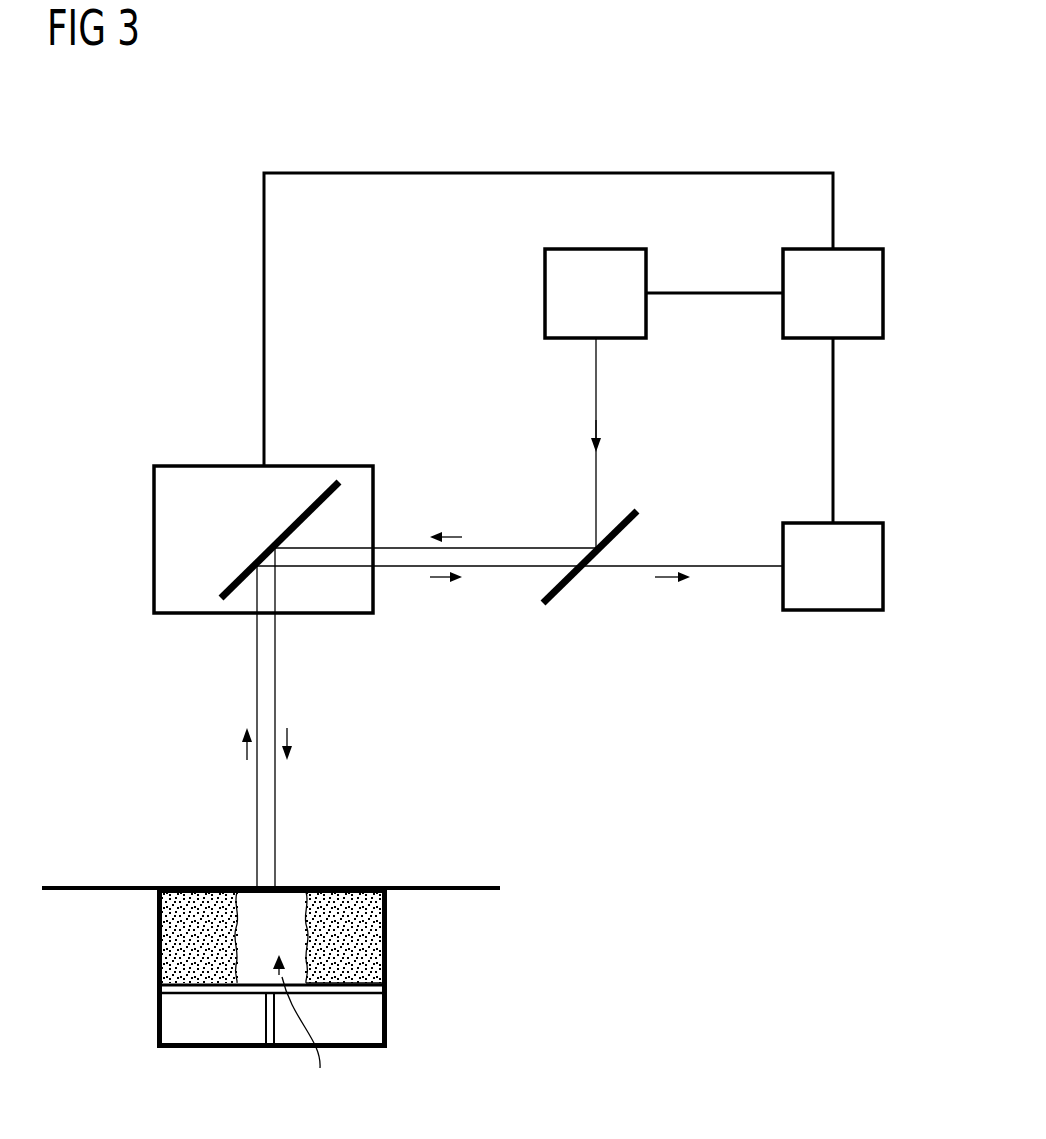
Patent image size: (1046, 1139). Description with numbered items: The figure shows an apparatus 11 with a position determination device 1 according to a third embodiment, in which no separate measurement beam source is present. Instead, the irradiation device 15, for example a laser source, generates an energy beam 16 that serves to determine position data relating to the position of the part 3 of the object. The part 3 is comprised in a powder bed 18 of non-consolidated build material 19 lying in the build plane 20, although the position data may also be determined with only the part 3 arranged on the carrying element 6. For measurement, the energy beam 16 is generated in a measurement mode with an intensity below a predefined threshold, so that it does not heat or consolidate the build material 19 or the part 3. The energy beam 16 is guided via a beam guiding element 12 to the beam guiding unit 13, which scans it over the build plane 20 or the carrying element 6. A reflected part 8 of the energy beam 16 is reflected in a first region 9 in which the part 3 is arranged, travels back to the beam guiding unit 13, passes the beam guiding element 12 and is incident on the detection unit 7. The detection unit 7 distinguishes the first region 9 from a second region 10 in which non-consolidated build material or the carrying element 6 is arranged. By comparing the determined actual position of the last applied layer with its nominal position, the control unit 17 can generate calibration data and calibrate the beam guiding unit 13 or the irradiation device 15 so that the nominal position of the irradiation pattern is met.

The position determination device 1 is at (877, 670).
The part of the object 3 is at (285, 900).
The carrying element 6 is at (183, 988).
The detection unit 7 is at (883, 574).
The reflected part of the energy beam 8 is at (497, 567).
The first region 9 is at (243, 868).
The second region 10 is at (177, 864).
The apparatus 11 is at (216, 351).
The beam guiding element 12 is at (565, 588).
The beam guiding unit 13 is at (154, 537).
The irradiation device 15 is at (503, 289).
The energy beam 16 is at (523, 548).
The control unit 17 is at (883, 292).
The powder bed 18 is at (362, 915).
The non-consolidated build material 19 is at (368, 967).
The build plane 20 is at (333, 888).